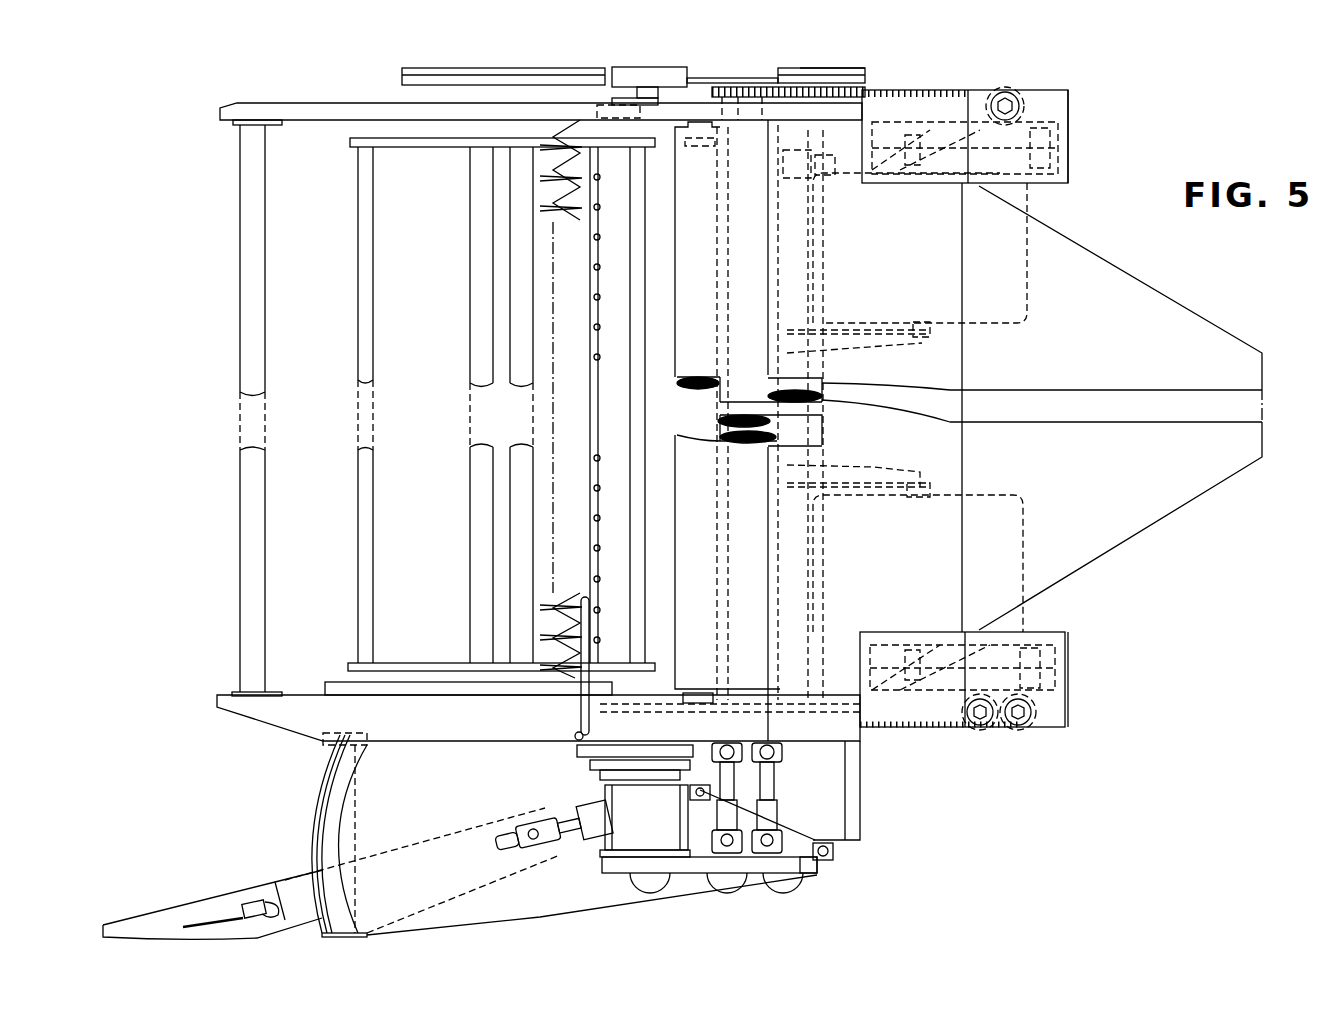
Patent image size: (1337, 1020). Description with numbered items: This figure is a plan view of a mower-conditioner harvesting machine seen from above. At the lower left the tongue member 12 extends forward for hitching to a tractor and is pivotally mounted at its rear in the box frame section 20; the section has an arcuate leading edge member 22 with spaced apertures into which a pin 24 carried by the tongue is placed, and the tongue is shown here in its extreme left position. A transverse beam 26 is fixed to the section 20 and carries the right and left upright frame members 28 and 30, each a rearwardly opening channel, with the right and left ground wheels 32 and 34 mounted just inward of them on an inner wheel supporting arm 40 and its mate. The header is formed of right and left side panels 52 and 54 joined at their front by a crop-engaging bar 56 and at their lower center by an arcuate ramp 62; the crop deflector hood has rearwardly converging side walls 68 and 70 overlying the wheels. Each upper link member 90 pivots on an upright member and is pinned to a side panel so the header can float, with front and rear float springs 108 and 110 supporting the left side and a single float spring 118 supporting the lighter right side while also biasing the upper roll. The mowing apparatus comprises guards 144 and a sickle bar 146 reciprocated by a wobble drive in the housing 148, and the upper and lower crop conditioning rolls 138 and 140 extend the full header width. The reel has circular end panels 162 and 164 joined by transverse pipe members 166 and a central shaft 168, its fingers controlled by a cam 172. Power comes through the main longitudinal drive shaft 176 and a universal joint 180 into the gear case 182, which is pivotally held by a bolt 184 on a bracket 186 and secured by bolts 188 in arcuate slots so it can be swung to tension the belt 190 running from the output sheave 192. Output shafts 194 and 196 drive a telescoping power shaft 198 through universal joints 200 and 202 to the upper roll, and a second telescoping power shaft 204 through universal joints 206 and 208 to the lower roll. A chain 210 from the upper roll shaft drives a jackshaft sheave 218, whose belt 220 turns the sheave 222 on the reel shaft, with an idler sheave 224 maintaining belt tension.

The tongue member 12 is at (190, 908).
The box frame section 20 is at (527, 905).
The arcuate leading edge member 22 is at (315, 797).
The pin 24 is at (258, 900).
The transverse beam 26 is at (717, 292).
The right upright frame member 28 is at (1015, 102).
The left upright frame member 30 is at (1057, 682).
The right wheel 32 is at (1030, 193).
The left wheel 34 is at (1018, 620).
The inner wheel supporting arm 40 is at (880, 350).
The right side panel 52 is at (282, 103).
The left side panel 54 is at (304, 706).
The crop-engaging bar 56 is at (242, 288).
The arcuate ramp 62 is at (625, 230).
The right side wall 68 is at (1160, 290).
The left side wall 70 is at (1183, 503).
The upper link member 90 is at (1093, 119).
The front float spring 108 is at (940, 728).
The rear float spring 110 is at (1005, 727).
The float spring 118 is at (940, 90).
The upper crop conditioning roll 138 is at (692, 437).
The lower crop conditioning roll 140 is at (800, 430).
The guards 144 is at (540, 210).
The sickle bar 146 is at (532, 150).
The housing 148 is at (668, 690).
The circular end panel 162 is at (388, 138).
The circular end panel 164 is at (407, 663).
The transverse pipe members 166 is at (500, 327).
The central shaft 168 is at (477, 481).
The cam 172 is at (337, 682).
The main longitudinal drive shaft 176 is at (505, 840).
The universal joint 180 is at (568, 846).
The gear case 182 is at (668, 873).
The bolt 184 is at (833, 857).
The bracket 186 is at (862, 828).
The bolts 188 is at (685, 800).
The belt 190 is at (600, 766).
The output sheave 192 is at (577, 751).
The output shaft 194 is at (752, 856).
The output shaft 196 is at (772, 856).
The telescoping power shaft 198 is at (735, 788).
The universal joint 200 is at (733, 856).
The universal joint 202 is at (790, 756).
The second telescoping power shaft 204 is at (778, 802).
The universal joint 206 is at (815, 872).
The universal joint 208 is at (774, 768).
The chain 210 is at (868, 92).
The sheave 218 is at (840, 68).
The belt 220 is at (705, 78).
The sheave 222 is at (402, 70).
The idler sheave 224 is at (628, 67).